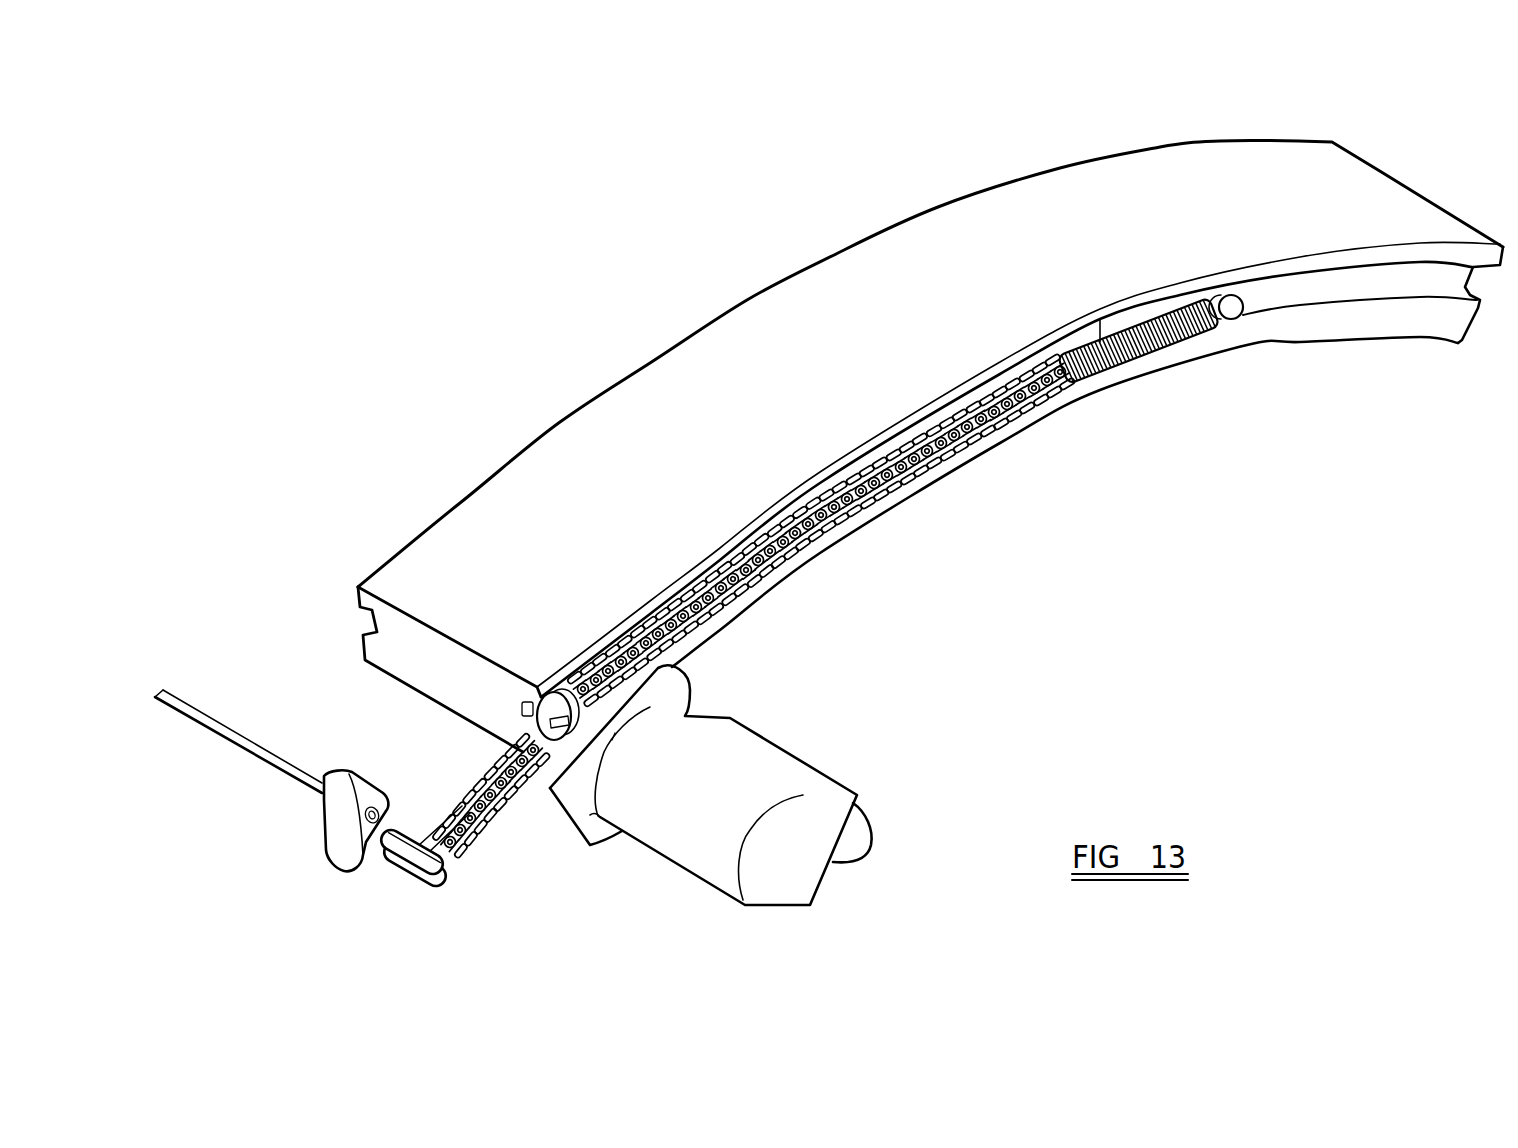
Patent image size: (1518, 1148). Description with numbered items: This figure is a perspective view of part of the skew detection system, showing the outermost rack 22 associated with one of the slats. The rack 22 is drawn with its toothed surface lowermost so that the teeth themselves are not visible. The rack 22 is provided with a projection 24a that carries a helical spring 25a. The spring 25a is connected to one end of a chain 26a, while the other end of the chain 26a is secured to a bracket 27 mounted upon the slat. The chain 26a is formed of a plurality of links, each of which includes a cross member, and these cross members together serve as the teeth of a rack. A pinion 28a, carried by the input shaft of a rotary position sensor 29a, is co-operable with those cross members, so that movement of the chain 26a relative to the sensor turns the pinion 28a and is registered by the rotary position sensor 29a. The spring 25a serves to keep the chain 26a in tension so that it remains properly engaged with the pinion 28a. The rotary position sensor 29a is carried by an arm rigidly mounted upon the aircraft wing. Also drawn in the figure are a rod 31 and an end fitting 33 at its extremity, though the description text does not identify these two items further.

The rack 22 is at (786, 292).
The projection 24a is at (1236, 318).
The helical spring 25a is at (1157, 350).
The chain 26a is at (985, 440).
The bracket 27 is at (452, 876).
The pinion 28a is at (527, 707).
The rotary position sensor 29a is at (817, 781).
The actuating rod 31 is at (240, 737).
The rod end fitting 33 is at (335, 824).